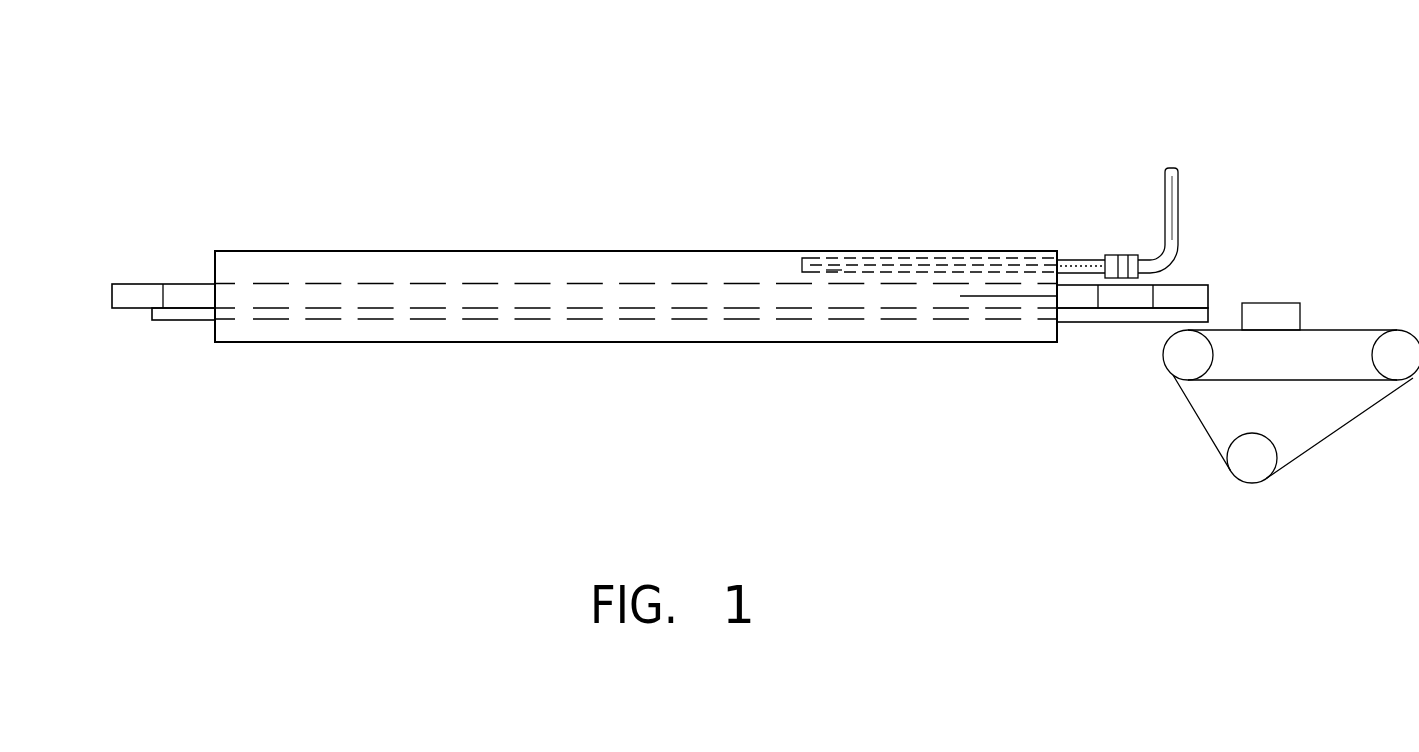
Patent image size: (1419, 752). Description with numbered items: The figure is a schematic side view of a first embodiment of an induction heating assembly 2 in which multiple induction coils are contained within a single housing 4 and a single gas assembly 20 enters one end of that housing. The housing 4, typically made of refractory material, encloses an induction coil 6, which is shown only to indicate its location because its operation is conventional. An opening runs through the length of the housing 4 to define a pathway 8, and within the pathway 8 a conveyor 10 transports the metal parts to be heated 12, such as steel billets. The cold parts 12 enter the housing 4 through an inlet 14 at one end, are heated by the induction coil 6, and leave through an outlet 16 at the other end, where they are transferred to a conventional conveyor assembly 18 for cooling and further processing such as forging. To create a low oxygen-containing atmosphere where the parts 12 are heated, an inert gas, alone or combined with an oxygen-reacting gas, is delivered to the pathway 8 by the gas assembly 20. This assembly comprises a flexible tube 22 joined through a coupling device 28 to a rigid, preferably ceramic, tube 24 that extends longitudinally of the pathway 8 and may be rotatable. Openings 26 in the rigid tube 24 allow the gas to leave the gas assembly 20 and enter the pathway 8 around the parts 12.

The induction heating assembly 2 is at (666, 97).
The housing 4 is at (355, 251).
The induction coil 6 is at (436, 330).
The pathway 8 is at (280, 298).
The conveyor 10 is at (168, 318).
The metal parts to be heated 12 is at (132, 310).
The inlet 14 is at (215, 280).
The outlet 16 is at (1062, 318).
The conveyor assembly 18 is at (1395, 268).
The gas assembly 20 is at (1061, 199).
The flexible tube 22 is at (1178, 188).
The rigid tube 24 is at (855, 262).
The openings 26 is at (833, 271).
The coupling device 28 is at (1112, 255).